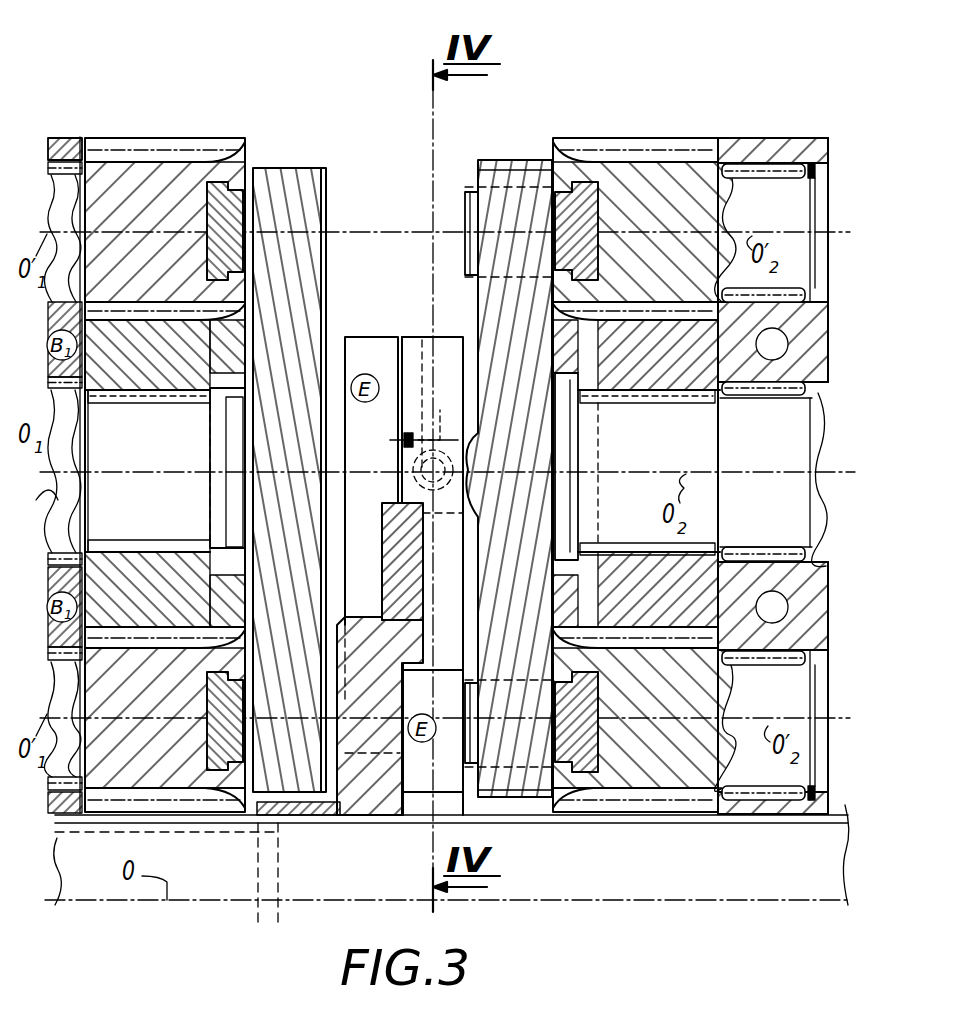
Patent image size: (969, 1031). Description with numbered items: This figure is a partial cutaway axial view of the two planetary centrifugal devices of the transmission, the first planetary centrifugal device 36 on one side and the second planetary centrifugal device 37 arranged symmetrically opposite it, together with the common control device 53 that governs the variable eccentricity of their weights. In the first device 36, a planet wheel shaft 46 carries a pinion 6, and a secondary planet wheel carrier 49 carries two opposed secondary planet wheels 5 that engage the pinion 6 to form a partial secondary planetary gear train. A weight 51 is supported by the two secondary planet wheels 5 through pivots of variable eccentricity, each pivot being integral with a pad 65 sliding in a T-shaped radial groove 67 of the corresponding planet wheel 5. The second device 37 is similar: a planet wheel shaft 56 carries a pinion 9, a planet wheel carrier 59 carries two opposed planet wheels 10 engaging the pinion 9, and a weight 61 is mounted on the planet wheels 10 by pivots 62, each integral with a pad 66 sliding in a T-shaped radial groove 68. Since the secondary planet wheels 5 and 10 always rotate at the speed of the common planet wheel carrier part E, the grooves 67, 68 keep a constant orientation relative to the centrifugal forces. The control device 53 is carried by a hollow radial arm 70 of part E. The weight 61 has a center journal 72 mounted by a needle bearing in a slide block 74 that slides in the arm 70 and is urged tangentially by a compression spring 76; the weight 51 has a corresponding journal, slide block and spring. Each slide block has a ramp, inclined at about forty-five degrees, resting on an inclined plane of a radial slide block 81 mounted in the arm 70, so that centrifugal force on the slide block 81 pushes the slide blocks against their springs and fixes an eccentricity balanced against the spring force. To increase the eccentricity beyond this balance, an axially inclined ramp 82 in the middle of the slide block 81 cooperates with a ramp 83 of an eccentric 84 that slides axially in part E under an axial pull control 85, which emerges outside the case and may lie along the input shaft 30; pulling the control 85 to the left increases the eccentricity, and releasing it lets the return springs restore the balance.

The secondary planet wheel 5 is at (138, 165).
The pinion 6 is at (148, 553).
The pinion 9 is at (652, 580).
The secondary planet wheel 10 is at (665, 170).
The input shaft 30 is at (80, 866).
The first planetary centrifugal device 36 is at (202, 80).
The second planetary centrifugal device 37 is at (630, 82).
The planet wheel shaft 46 is at (68, 497).
The secondary planet wheel carrier 49 is at (67, 138).
The weight 51 is at (318, 183).
The eccentricity control device 53 is at (388, 310).
The planet wheel shaft 56 is at (800, 494).
The secondary planet wheel carrier 59 is at (778, 138).
The weight 61 is at (490, 158).
The pivot 62 is at (468, 255).
The pad 65 is at (243, 222).
The pad 66 is at (577, 243).
The T-shaped radial groove 67 is at (211, 182).
The T-shaped radial groove 68 is at (598, 182).
The hollow radial arm 70 is at (368, 350).
The center journal 72 is at (470, 487).
The slide block 74 is at (449, 360).
The compression spring 76 is at (458, 480).
The radial slide block 81 is at (384, 508).
The axially inclined ramp 82 is at (382, 533).
The ramp 83 is at (378, 592).
The eccentric 84 is at (400, 555).
The axial pull control 85 is at (295, 815).